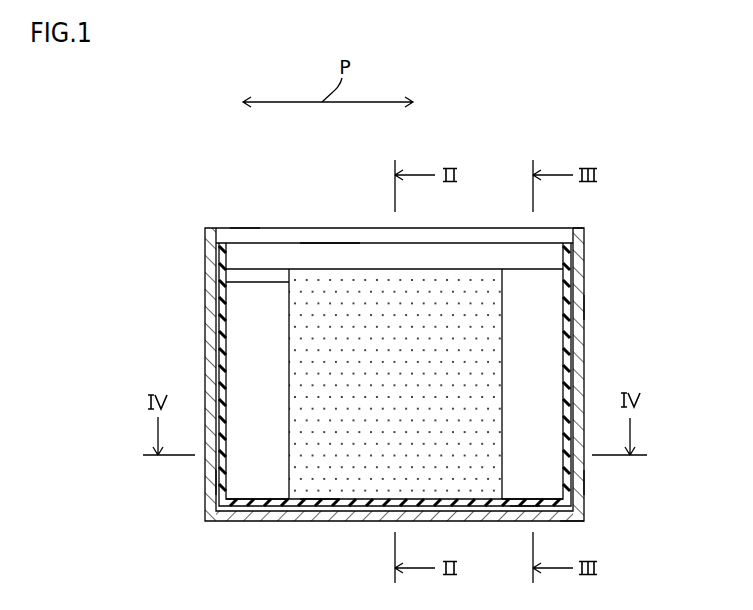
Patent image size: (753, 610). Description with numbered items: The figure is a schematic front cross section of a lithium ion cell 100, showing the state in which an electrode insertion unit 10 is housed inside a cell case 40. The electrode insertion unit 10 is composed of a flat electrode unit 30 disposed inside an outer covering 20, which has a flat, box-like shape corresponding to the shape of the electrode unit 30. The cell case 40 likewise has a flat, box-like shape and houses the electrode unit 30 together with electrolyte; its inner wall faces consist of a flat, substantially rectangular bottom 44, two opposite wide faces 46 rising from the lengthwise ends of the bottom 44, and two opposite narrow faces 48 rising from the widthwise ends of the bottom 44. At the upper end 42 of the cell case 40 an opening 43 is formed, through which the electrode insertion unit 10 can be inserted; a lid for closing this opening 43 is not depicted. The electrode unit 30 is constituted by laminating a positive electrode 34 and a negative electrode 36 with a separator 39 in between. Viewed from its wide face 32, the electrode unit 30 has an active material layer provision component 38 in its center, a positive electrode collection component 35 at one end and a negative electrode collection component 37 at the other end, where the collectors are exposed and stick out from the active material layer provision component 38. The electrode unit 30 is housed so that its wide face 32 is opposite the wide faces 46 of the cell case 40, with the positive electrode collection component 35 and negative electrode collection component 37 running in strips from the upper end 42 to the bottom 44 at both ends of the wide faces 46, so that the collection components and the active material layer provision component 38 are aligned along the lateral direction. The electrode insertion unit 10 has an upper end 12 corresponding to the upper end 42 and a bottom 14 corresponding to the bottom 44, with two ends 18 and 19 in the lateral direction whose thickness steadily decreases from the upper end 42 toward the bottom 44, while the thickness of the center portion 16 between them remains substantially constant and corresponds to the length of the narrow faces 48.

The cell 100 is at (664, 185).
The electrode insertion unit 10 is at (320, 235).
The upper end of the electrode insertion unit 12 is at (540, 243).
The bottom of the electrode insertion unit 14 is at (523, 507).
The center portion 16 is at (322, 487).
The end in the lateral direction 18 is at (573, 482).
The end in the lateral direction 19 is at (218, 480).
The outer covering 20 is at (303, 243).
The electrode unit 30 is at (292, 260).
The wide face 32 is at (258, 295).
The positive electrode 34 is at (532, 385).
The positive electrode collection component 35 is at (598, 424).
The negative electrode 36 is at (257, 385).
The negative electrode collection component 37 is at (205, 413).
The active material layer provision component 38 is at (395, 340).
The separator 39 is at (360, 290).
The cell case 40 is at (182, 222).
The upper end of the cell case 42 is at (565, 231).
The opening 43 is at (247, 228).
The bottom 44 is at (567, 522).
The wide faces 46 is at (236, 237).
The narrow faces 48 is at (560, 307).